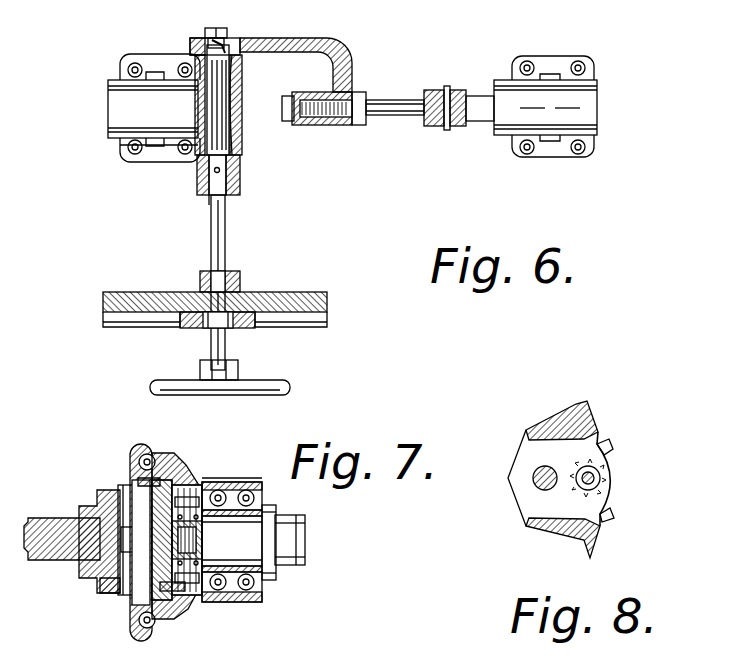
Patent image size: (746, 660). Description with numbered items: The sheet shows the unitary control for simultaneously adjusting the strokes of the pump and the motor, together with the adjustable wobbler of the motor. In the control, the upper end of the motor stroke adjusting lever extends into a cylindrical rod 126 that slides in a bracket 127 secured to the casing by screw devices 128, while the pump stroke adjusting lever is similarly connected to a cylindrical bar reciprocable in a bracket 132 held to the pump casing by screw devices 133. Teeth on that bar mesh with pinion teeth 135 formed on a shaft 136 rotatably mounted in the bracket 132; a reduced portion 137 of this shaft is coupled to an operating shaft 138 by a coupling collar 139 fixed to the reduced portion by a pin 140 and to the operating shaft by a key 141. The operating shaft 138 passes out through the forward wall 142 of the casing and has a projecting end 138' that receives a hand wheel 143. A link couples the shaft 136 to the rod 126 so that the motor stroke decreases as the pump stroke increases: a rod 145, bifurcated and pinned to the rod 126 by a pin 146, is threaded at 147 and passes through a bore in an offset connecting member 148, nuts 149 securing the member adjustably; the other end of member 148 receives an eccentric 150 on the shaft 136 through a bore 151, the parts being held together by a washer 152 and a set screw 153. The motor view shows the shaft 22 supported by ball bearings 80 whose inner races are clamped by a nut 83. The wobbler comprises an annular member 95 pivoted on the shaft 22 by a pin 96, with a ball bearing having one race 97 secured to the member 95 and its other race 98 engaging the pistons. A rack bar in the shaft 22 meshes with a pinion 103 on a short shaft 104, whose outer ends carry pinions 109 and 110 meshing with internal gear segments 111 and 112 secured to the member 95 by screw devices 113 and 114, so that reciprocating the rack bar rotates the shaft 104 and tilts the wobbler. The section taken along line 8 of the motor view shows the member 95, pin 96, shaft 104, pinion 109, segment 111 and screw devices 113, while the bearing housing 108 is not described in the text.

In FIG. 7, the shaft 22 is at (40, 520).
In FIG. 7, the section line 8 is at (97, 517).
In FIG. 7, the ball bearings 80 is at (247, 481).
In FIG. 7, the nut 83 is at (272, 577).
In FIG. 7, the annular member 95 is at (176, 602).
In FIG. 8, the annular member 95 is at (544, 430).
In FIG. 7, the pin 96 is at (124, 500).
In FIG. 8, the pin 96 is at (535, 486).
In FIG. 7, the race 97 is at (160, 622).
In FIG. 7, the race 98 is at (138, 636).
In FIG. 7, the pinion 103 is at (130, 560).
In FIG. 7, the short shaft 104 is at (112, 576).
In FIG. 8, the short shaft 104 is at (584, 472).
In FIG. 7, the shaft 108 is at (232, 541).
In FIG. 7, the pinion 109 is at (170, 488).
In FIG. 8, the pinion 109 is at (578, 490).
In FIG. 7, the pinion 110 is at (180, 548).
In FIG. 7, the internal gear segment 111 is at (232, 486).
In FIG. 8, the internal gear segment 111 is at (612, 468).
In FIG. 7, the internal gear segment 112 is at (236, 602).
In FIG. 7, the screw device 113 is at (224, 482).
In FIG. 8, the screw device 113 is at (608, 448).
In FIG. 7, the screw device 114 is at (182, 593).
In FIG. 6, the cylindrical rod 126 is at (488, 110).
In FIG. 6, the bracket 127 is at (597, 106).
In FIG. 6, the screw devices 128 is at (577, 155).
In FIG. 6, the bracket 132 is at (158, 155).
In FIG. 6, the screw devices 133 is at (133, 150).
In FIG. 6, the pinion teeth 135 is at (215, 110).
In FIG. 6, the shaft 136 is at (175, 72).
In FIG. 6, the reduced portion 137 is at (240, 176).
In FIG. 6, the operating shaft 138 is at (249, 282).
In FIG. 6, the projecting end 138' is at (258, 312).
In FIG. 6, the coupling collar 139 is at (240, 194).
In FIG. 6, the pin 140 is at (222, 169).
In FIG. 6, the key 141 is at (206, 198).
In FIG. 6, the forward wall 142 is at (128, 300).
In FIG. 6, the hand wheel 143 is at (165, 385).
In FIG. 6, the rod 145 is at (405, 98).
In FIG. 6, the pin 146 is at (455, 92).
In FIG. 6, the threaded portion 147 is at (332, 126).
In FIG. 6, the offset connecting member 148 is at (340, 52).
In FIG. 6, the nuts 149 is at (300, 96).
In FIG. 6, the eccentric 150 is at (238, 55).
In FIG. 6, the bore 151 is at (195, 46).
In FIG. 6, the washer 152 is at (210, 40).
In FIG. 6, the set screw 153 is at (226, 31).